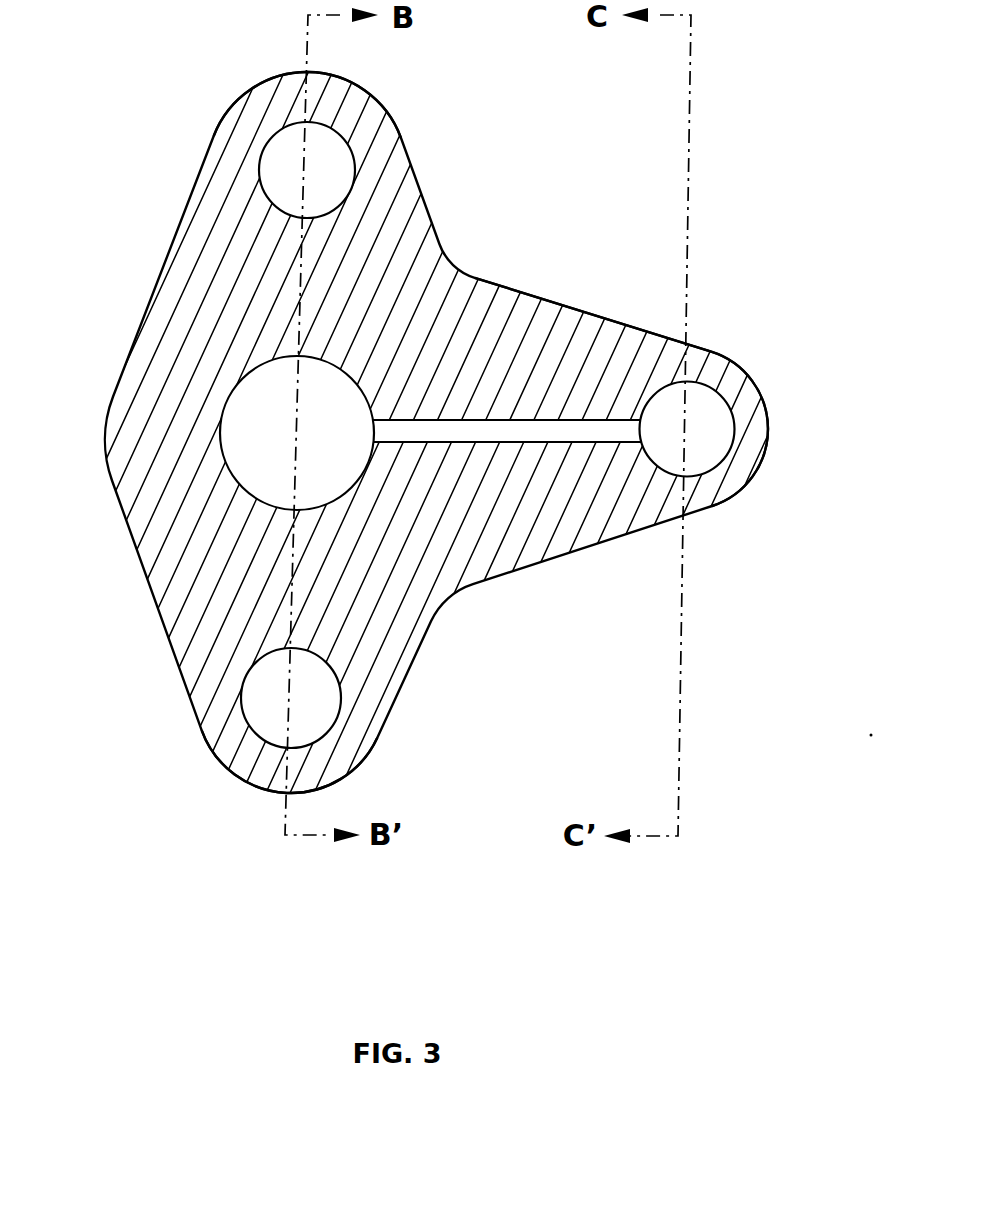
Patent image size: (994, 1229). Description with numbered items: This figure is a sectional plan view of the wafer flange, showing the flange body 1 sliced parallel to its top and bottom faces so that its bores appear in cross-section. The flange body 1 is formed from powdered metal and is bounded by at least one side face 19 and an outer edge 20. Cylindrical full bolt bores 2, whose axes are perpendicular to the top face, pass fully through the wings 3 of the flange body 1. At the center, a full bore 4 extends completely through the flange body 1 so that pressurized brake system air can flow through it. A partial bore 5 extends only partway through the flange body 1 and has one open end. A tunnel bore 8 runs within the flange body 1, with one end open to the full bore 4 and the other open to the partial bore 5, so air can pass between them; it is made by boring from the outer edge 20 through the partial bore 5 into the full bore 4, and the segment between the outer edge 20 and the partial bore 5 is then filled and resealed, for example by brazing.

The flange body 1 is at (427, 270).
The full bolt bores 2 is at (328, 172).
The wings 3 is at (262, 113).
The full bore 4 is at (253, 427).
The partial bore 5 is at (702, 430).
The tunnel bore 8 is at (483, 432).
The side face 19 is at (515, 290).
The outer edge 20 is at (768, 430).